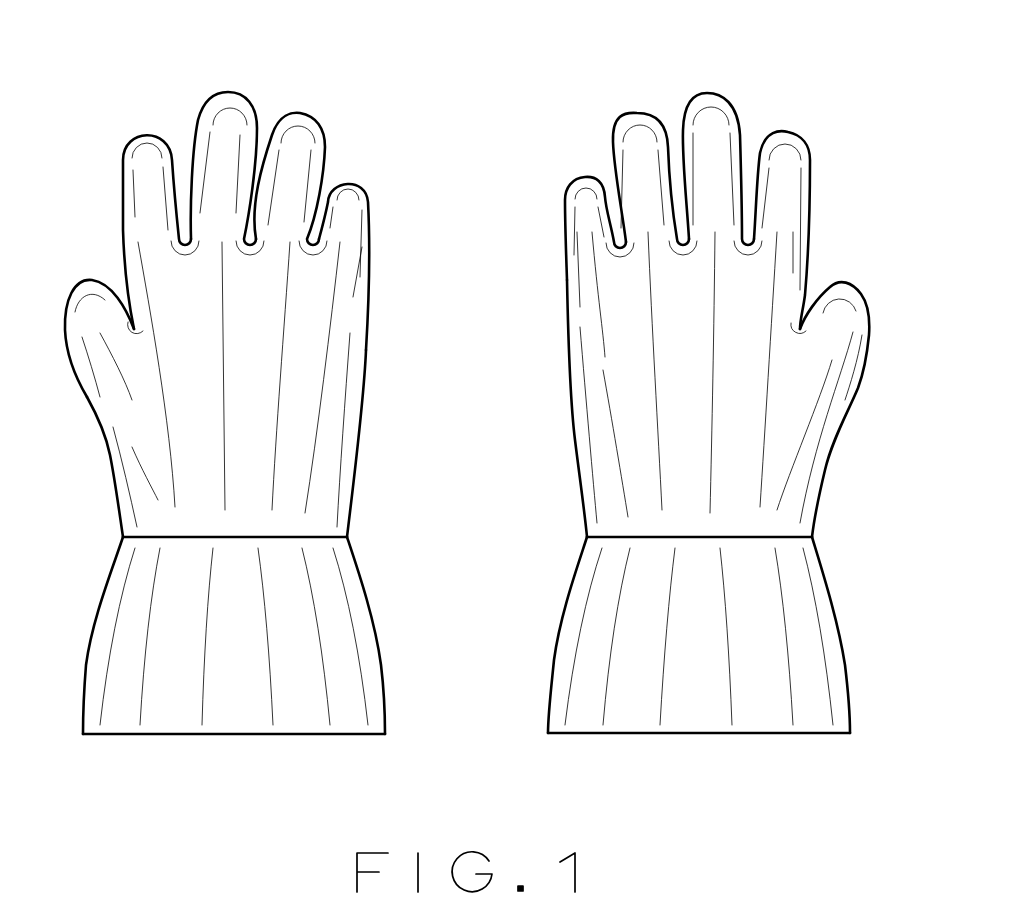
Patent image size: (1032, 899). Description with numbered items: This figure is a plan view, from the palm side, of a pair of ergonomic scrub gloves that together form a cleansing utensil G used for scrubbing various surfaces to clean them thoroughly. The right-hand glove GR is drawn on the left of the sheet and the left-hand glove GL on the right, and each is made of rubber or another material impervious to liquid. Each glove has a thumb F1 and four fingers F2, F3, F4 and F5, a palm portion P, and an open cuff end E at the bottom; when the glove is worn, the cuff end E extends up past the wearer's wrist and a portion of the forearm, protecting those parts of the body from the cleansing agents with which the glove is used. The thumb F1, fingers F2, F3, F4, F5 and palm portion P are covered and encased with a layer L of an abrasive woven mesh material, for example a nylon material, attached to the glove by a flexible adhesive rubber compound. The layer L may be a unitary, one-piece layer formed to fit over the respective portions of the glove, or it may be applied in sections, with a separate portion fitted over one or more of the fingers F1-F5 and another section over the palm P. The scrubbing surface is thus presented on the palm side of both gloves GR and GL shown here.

The thumb F1 is at (347, 177).
The finger F2 is at (288, 117).
The finger F3 is at (210, 100).
The finger F4 is at (123, 148).
The finger F5 is at (72, 287).
The palm portion P is at (235, 400).
The cleansing utensil G is at (244, 638).
The cuff end E is at (237, 735).
The layer L is at (105, 463).
The right-hand scrub glove GR is at (100, 513).
The left-hand scrub glove GL is at (560, 500).